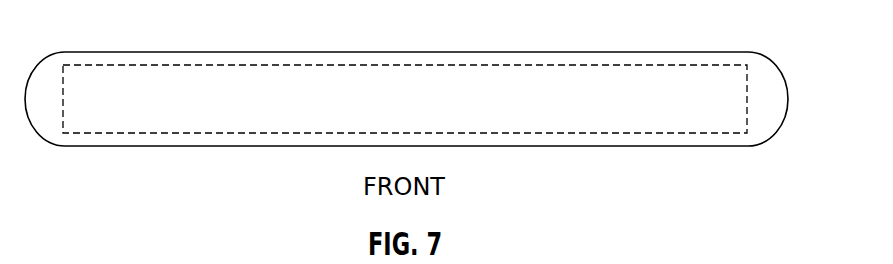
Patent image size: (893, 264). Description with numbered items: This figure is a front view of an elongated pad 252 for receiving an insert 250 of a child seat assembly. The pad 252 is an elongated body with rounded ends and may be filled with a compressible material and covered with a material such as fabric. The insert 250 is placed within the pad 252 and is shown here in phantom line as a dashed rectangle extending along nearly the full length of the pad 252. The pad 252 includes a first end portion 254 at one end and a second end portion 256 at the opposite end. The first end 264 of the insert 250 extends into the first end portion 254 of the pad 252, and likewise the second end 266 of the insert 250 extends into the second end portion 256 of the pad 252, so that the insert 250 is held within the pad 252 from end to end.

The insert 250 is at (215, 133).
The elongated pad 252 is at (288, 146).
The first end portion 254 is at (92, 52).
The second end portion 256 is at (708, 52).
The first end 264 is at (98, 108).
The second end 266 is at (698, 110).